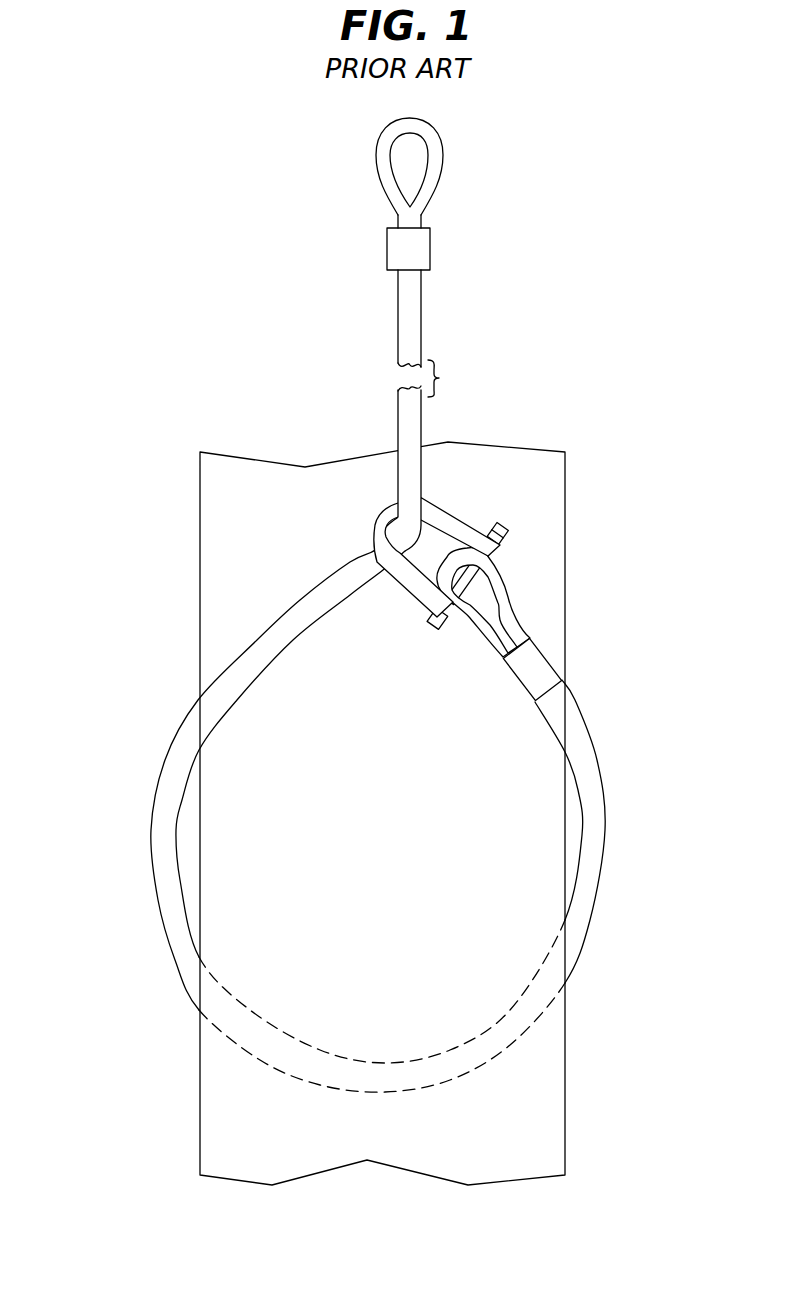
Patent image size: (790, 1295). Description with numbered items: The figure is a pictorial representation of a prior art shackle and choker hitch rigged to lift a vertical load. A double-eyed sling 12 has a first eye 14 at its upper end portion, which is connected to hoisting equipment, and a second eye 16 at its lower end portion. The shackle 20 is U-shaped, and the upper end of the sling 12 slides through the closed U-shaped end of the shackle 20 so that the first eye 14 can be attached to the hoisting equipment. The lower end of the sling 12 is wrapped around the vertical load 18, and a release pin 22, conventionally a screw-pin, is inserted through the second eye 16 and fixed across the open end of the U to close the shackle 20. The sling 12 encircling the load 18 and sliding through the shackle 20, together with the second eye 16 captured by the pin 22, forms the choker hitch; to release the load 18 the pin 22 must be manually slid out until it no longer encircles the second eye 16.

The double-eyed sling 12 is at (590, 733).
The first eye 14 is at (443, 160).
The second eye 16 is at (518, 590).
The vertical load 18 is at (213, 573).
The shackle 20 is at (443, 483).
The release pin 22 is at (503, 530).